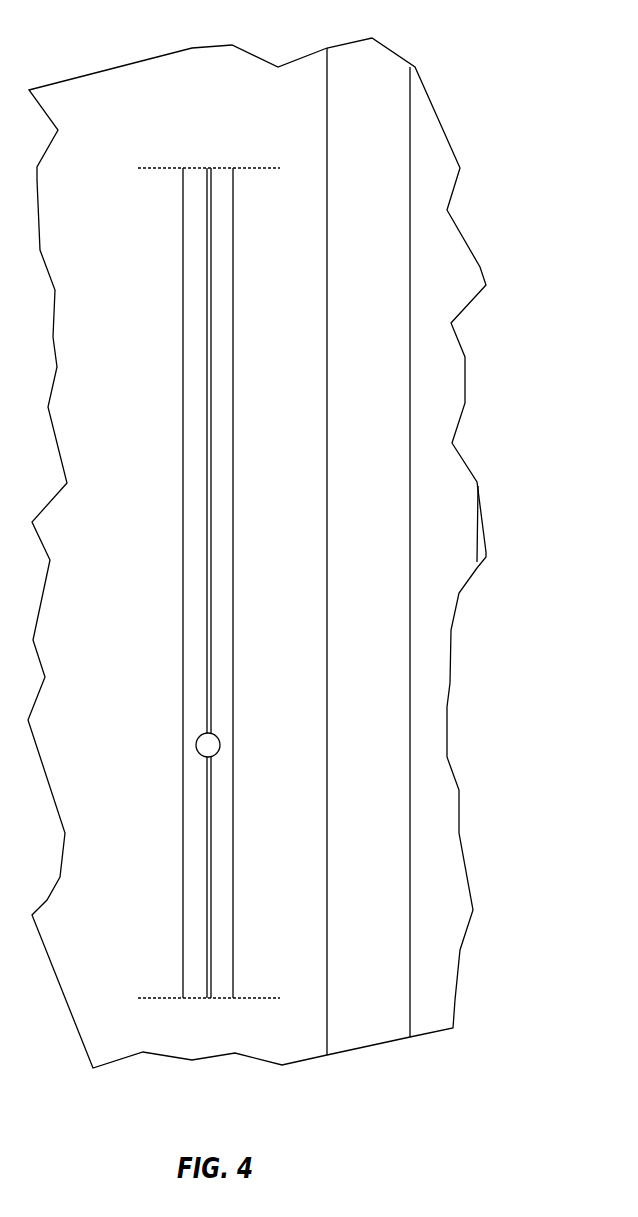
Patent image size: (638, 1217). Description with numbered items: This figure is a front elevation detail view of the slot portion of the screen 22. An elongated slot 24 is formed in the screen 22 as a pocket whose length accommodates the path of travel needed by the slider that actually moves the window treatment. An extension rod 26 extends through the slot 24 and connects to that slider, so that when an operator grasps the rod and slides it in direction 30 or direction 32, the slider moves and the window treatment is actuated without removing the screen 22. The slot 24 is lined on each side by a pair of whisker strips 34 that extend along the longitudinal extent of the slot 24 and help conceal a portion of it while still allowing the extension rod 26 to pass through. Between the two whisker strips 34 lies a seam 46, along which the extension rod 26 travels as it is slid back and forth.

The screen 22 is at (275, 113).
The slot 24 is at (228, 248).
The extension rod 26 is at (208, 745).
The direction 30 is at (121, 616).
The direction 32 is at (121, 616).
The whisker strips 34 is at (222, 177).
The seam 46 is at (207, 442).